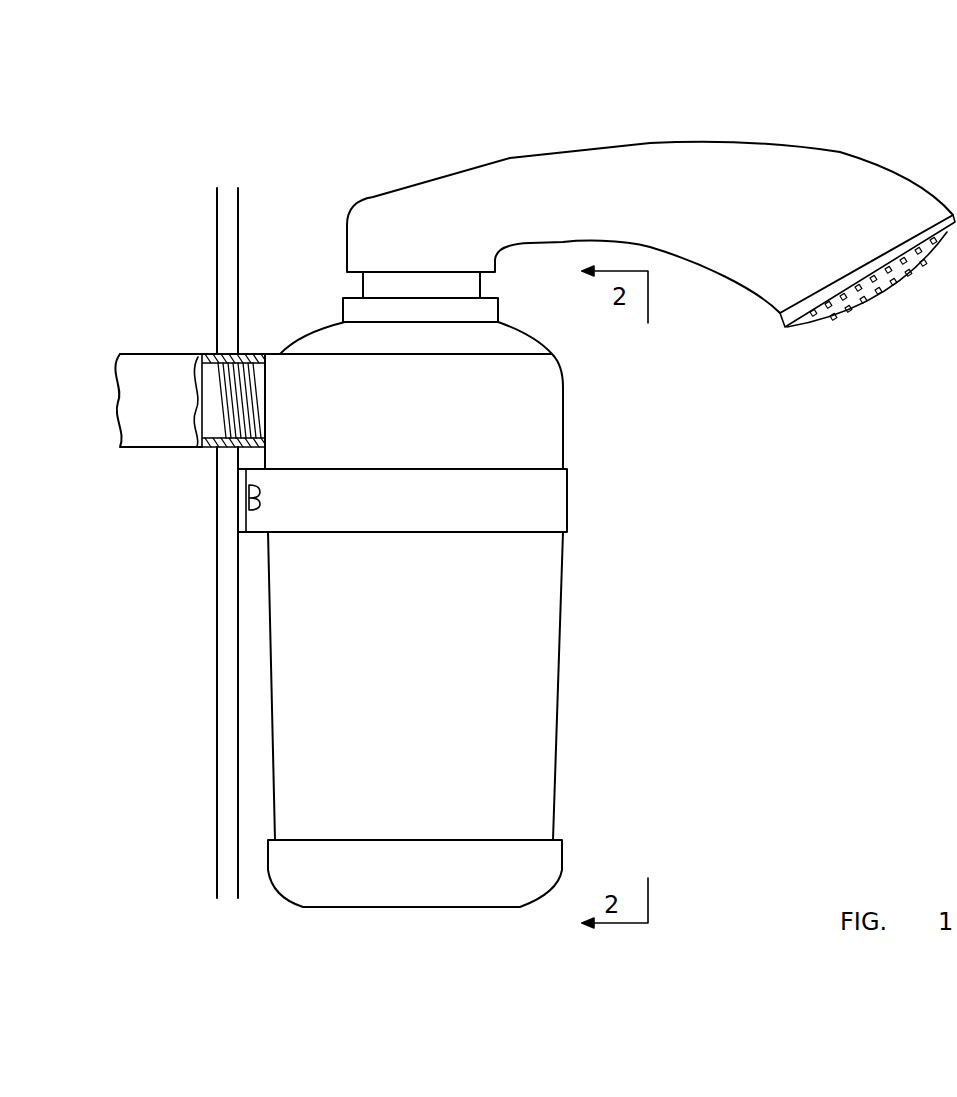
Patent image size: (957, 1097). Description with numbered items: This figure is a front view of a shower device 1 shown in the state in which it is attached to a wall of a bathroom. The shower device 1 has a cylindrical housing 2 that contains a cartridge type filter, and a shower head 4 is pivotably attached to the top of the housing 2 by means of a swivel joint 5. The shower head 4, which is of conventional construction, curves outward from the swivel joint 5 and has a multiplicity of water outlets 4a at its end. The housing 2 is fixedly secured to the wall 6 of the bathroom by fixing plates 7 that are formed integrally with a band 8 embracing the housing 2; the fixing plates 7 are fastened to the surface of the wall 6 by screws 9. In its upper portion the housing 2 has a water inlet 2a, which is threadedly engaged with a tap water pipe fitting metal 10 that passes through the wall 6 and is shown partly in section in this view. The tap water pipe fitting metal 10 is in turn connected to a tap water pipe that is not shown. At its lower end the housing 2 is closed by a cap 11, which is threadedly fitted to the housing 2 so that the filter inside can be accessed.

The shower device 1 is at (510, 148).
The cylindrical housing 2 is at (528, 642).
The water inlet 2a is at (210, 418).
The shower head 4 is at (737, 167).
The water outlets 4a is at (878, 293).
The swivel joint 5 is at (375, 282).
The wall 6 is at (230, 207).
The fixing plates 7 is at (237, 500).
The band 8 is at (572, 500).
The screws 9 is at (258, 490).
The tap water pipe fitting metal 10 is at (150, 367).
The cap 11 is at (527, 860).